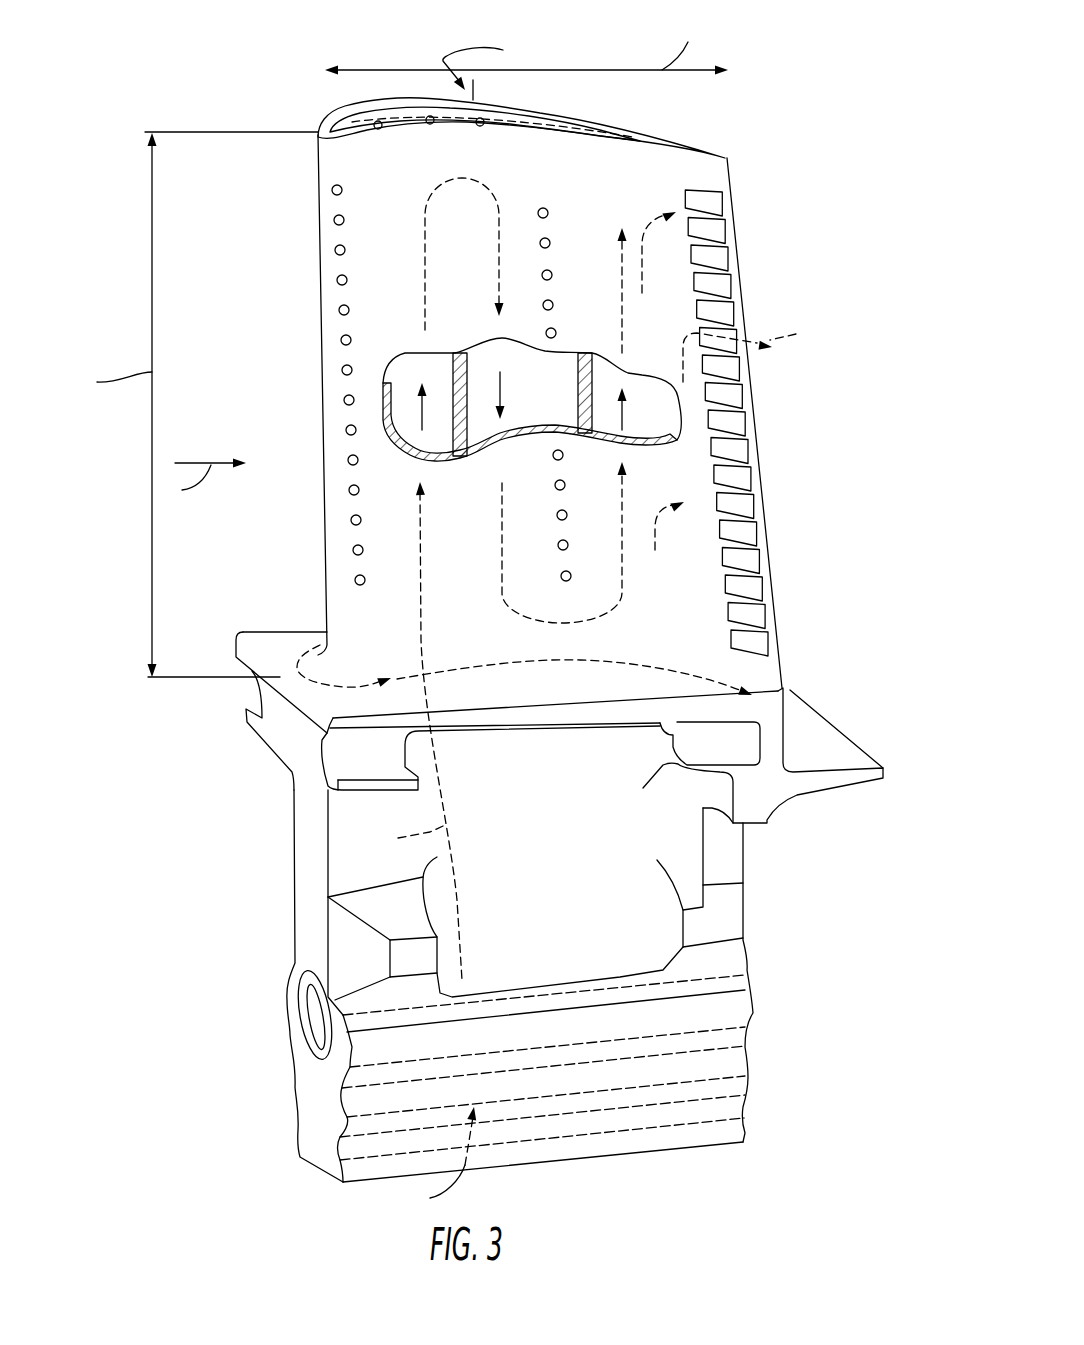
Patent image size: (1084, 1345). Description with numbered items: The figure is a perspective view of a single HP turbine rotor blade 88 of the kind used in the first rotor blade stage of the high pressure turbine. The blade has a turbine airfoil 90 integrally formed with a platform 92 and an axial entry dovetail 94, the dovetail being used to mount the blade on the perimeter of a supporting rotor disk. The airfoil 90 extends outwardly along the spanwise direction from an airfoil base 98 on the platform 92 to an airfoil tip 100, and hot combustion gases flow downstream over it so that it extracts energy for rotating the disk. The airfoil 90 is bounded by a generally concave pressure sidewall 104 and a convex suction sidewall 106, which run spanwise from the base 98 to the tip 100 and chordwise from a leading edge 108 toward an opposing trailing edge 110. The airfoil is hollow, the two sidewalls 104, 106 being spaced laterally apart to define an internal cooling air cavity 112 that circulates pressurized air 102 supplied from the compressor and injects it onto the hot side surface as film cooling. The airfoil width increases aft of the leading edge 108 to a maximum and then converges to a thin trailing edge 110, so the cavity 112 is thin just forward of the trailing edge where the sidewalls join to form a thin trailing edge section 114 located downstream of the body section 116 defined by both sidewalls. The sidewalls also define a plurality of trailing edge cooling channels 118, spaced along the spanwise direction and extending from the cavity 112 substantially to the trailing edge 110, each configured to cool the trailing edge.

The HP turbine rotor blade 88 is at (862, 180).
The turbine airfoil 90 is at (667, 178).
The platform 92 is at (660, 693).
The axial entry dovetail 94 is at (808, 1015).
The airfoil base 98 is at (365, 676).
The airfoil tip 100 is at (619, 108).
The pressurized air 102 is at (500, 378).
The pressure sidewall 104 is at (378, 218).
The suction sidewall 106 is at (310, 150).
The leading edge 108 is at (318, 466).
The trailing edge 110 is at (770, 480).
The internal cooling air cavity 112 is at (522, 428).
The trailing edge section 114 is at (722, 260).
The body section 116 is at (503, 165).
The trailing edge cooling channel 118 is at (720, 313).